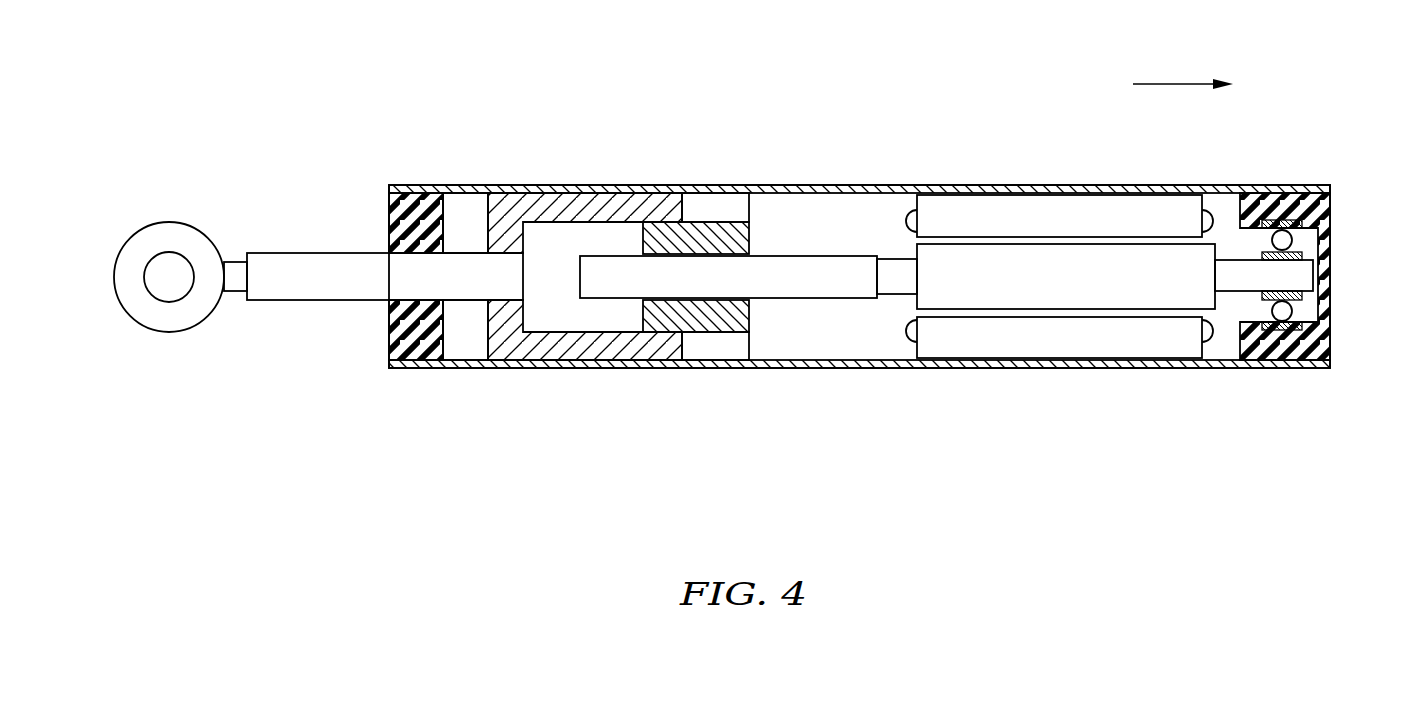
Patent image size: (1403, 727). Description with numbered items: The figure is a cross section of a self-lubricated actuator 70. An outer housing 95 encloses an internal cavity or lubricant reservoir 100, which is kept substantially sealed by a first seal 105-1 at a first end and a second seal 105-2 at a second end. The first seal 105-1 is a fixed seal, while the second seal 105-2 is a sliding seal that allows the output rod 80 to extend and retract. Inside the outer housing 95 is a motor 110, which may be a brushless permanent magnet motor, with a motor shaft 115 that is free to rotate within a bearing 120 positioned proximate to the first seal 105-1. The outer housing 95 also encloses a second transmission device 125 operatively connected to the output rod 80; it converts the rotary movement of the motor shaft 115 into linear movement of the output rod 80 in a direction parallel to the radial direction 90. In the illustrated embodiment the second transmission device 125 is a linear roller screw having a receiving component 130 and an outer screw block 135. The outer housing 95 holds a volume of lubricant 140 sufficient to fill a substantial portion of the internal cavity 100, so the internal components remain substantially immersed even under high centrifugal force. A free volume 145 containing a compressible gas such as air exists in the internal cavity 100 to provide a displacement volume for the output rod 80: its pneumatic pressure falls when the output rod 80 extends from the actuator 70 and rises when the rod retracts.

The self-lubricated actuator 70 is at (308, 155).
The output rod 80 is at (287, 288).
The radial direction 90 is at (1173, 84).
The outer housing 95 is at (817, 368).
The internal cavity 100 is at (801, 208).
The first seal 105-1 is at (1297, 352).
The second seal 105-2 is at (412, 200).
The motor 110 is at (1145, 298).
The motor shaft 115 is at (898, 283).
The bearing 120 is at (1282, 243).
The second transmission device 125 is at (630, 297).
The receiving component 130 is at (713, 230).
The outer screw block 135 is at (727, 343).
The lubricant 140 is at (508, 217).
The free volume 145 is at (468, 338).